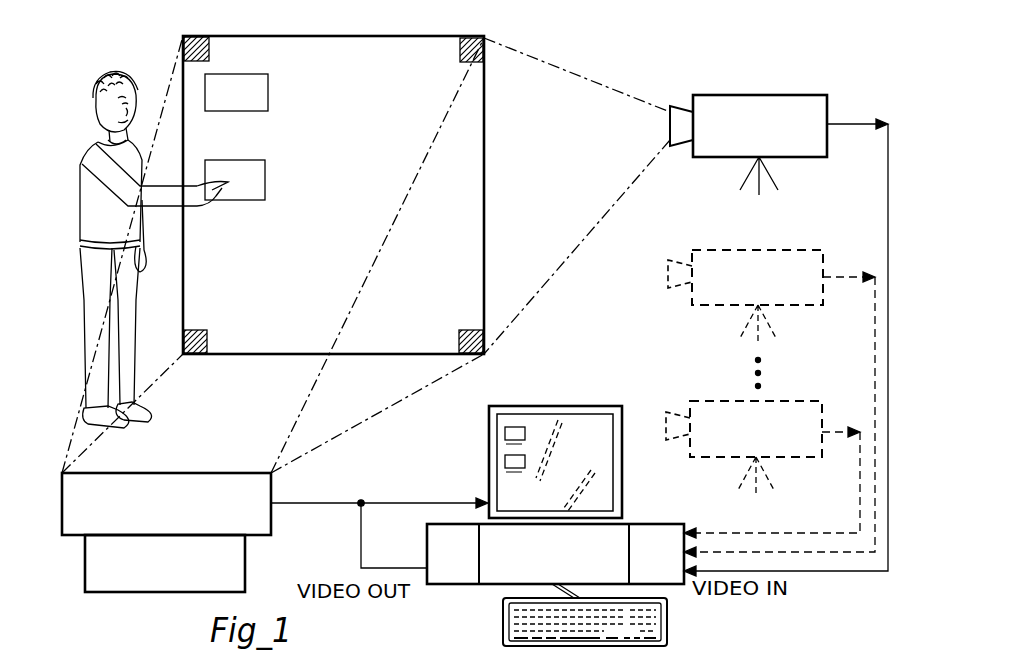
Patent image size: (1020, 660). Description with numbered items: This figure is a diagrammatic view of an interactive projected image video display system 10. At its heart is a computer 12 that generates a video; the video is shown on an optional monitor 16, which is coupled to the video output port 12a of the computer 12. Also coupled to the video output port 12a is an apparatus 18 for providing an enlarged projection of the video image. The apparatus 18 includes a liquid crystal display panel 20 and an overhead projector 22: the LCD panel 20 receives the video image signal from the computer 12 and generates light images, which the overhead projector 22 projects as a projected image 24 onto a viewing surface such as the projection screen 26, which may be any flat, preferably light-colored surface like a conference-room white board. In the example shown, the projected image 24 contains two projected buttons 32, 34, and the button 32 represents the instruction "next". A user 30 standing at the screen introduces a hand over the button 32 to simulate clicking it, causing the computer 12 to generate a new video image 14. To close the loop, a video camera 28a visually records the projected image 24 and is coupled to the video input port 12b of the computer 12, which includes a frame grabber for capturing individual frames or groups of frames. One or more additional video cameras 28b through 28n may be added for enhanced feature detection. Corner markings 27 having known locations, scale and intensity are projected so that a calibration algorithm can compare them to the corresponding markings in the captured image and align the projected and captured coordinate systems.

The projected image video display system 10 is at (610, 74).
The computer 12 is at (555, 567).
The video output port 12a is at (466, 570).
The video input port 12b is at (670, 570).
The new video image 14 is at (591, 473).
The monitor 16 is at (588, 406).
The apparatus for providing an enlarged projection 18 is at (121, 596).
The liquid crystal display panel 20 is at (212, 473).
The overhead projector 22 is at (246, 572).
The projected image 24 is at (381, 121).
The projection screen 26 is at (458, 36).
The corner markings 27 is at (184, 40).
The video camera 28a is at (784, 96).
The additional video camera 28b is at (781, 250).
The additional video camera 28n is at (785, 402).
The user 30 is at (82, 146).
The projected button 32 is at (266, 172).
The projected button 34 is at (269, 83).